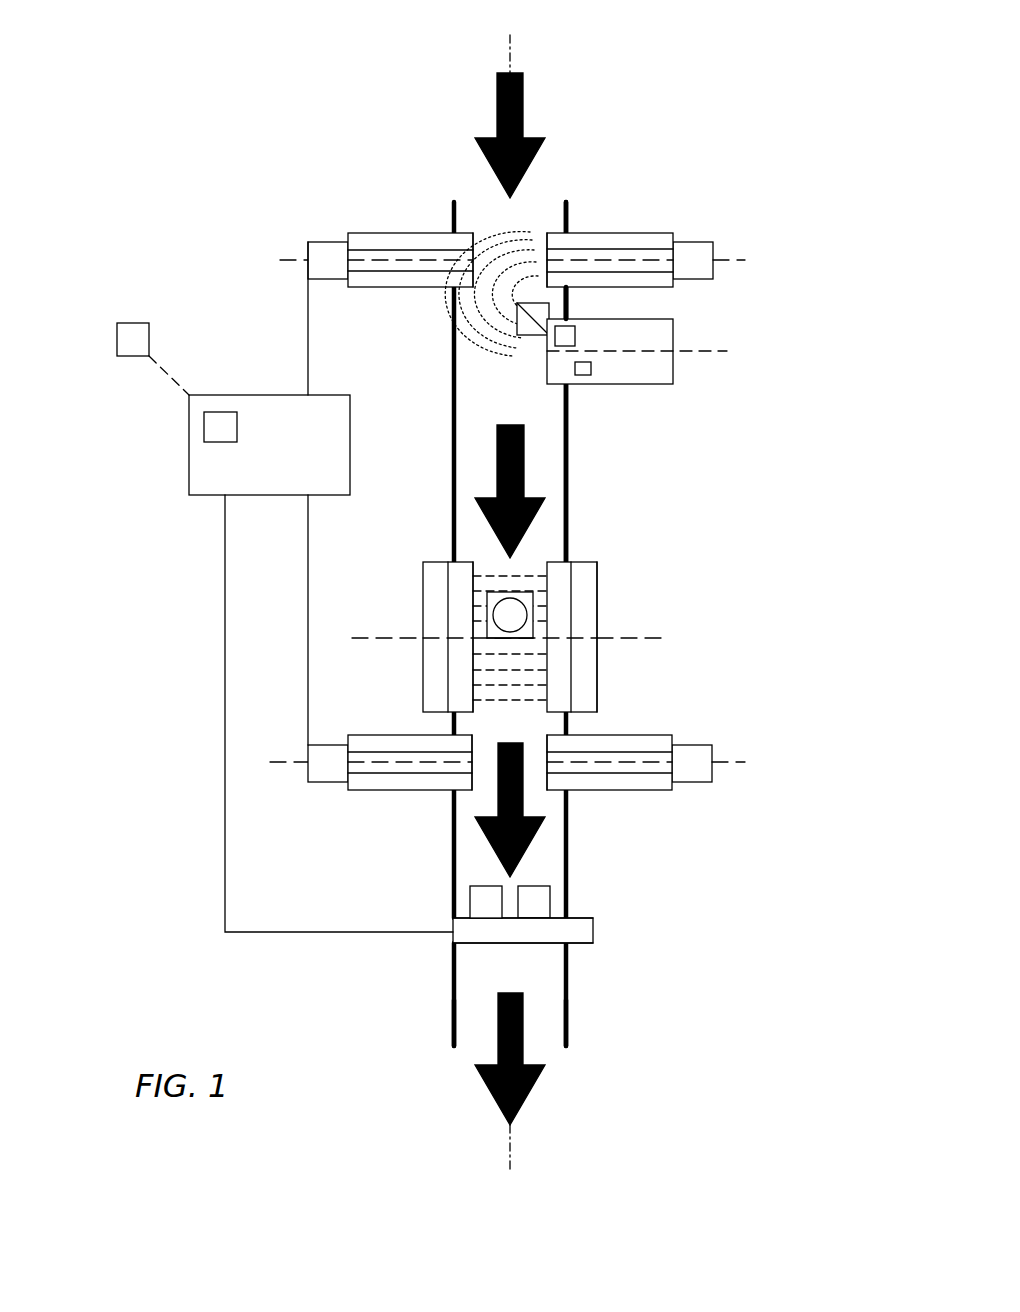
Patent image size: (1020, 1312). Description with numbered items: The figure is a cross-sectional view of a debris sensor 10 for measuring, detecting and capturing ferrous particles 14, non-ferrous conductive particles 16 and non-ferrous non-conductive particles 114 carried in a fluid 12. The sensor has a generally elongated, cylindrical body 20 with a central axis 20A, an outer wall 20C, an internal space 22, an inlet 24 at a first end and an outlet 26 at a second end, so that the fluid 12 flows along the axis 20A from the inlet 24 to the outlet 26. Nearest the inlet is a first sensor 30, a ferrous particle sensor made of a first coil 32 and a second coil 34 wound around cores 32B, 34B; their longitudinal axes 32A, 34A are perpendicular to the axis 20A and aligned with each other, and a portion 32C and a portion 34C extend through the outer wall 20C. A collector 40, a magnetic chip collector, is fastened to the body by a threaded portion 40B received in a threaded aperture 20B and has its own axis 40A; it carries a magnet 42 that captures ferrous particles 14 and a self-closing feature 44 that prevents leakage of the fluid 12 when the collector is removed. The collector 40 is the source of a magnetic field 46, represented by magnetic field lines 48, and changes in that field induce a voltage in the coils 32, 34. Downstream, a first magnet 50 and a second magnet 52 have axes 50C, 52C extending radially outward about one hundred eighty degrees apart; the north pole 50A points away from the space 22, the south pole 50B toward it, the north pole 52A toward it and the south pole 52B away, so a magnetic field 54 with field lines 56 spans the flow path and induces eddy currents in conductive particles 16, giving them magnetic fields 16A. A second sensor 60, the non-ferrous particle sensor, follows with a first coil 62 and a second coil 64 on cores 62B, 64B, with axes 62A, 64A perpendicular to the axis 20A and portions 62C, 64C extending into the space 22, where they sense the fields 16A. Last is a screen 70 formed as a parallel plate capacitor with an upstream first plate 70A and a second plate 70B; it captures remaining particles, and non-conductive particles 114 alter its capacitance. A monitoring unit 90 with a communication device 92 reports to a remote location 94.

The debris sensor 10 is at (226, 158).
The fluid 12 is at (497, 108).
The ferrous particles 14 is at (516, 322).
The non-ferrous conductive particles 16 is at (528, 596).
The magnetic fields of conductive particles 16A is at (484, 642).
The body 20 is at (590, 452).
The central axis 20A is at (512, 62).
The aperture 20B is at (568, 392).
The outer wall 20C is at (570, 465).
The internal space 22 is at (546, 1036).
The inlet 24 is at (530, 208).
The outlet 26 is at (472, 1036).
The first sensor 30 is at (504, 227).
The first coil 32 is at (340, 256).
The longitudinal axis of first coil 32A is at (300, 258).
The core of first coil 32B is at (402, 268).
The portion of first coil 32C is at (468, 222).
The second coil 34 is at (653, 259).
The longitudinal axis of second coil 34A is at (736, 262).
The core of second coil 34B is at (644, 255).
The portion of second coil 34C is at (548, 245).
The collector 40 is at (663, 356).
The longitudinal axis of collector 40A is at (722, 354).
The threaded portion 40B is at (570, 318).
The magnet 42 is at (576, 334).
The feature 44 is at (592, 368).
The magnetic field 46 is at (492, 352).
The magnetic field lines 48 is at (516, 346).
The first magnet 50 is at (396, 595).
The north pole of first magnet 50A is at (438, 570).
The south pole of first magnet 50B is at (464, 570).
The axis of first magnet 50C is at (382, 636).
The second magnet 52 is at (623, 633).
The north pole of second magnet 52A is at (554, 700).
The south pole of second magnet 52B is at (584, 680).
The axis of second magnet 52C is at (637, 636).
The magnetic field 54 is at (500, 704).
The magnetic field lines 56 is at (503, 700).
The second sensor 60 is at (517, 734).
The first coil 62 is at (352, 774).
The longitudinal axis of first coil 62A is at (298, 762).
The core 62B is at (386, 738).
The portion of first coil 62C is at (464, 800).
The second coil 64 is at (674, 766).
The longitudinal axis of second coil 64A is at (742, 764).
The core 64B is at (656, 738).
The portion of second coil 64C is at (552, 800).
The screen 70 is at (522, 945).
The first plate 70A is at (590, 918).
The second plate 70B is at (588, 944).
The monitoring unit 90 is at (305, 587).
The communication device 92 is at (238, 436).
The remote location 94 is at (124, 322).
The non-ferrous non-conductive particles 114 is at (468, 892).